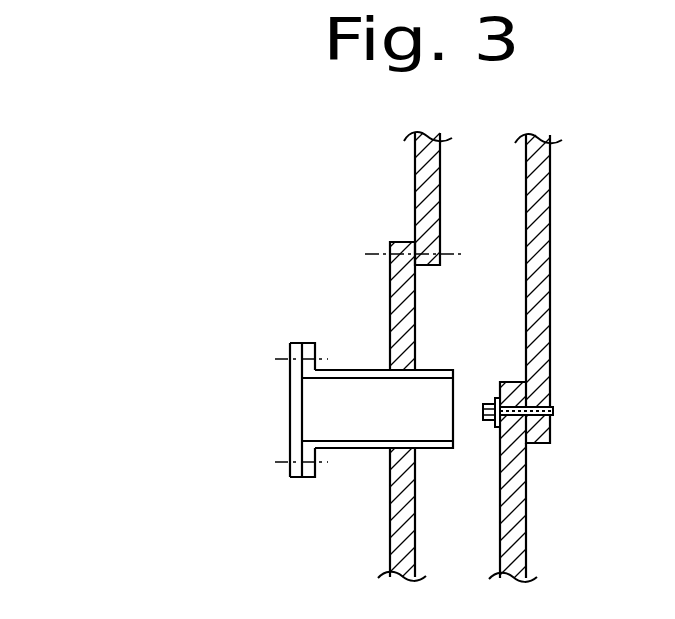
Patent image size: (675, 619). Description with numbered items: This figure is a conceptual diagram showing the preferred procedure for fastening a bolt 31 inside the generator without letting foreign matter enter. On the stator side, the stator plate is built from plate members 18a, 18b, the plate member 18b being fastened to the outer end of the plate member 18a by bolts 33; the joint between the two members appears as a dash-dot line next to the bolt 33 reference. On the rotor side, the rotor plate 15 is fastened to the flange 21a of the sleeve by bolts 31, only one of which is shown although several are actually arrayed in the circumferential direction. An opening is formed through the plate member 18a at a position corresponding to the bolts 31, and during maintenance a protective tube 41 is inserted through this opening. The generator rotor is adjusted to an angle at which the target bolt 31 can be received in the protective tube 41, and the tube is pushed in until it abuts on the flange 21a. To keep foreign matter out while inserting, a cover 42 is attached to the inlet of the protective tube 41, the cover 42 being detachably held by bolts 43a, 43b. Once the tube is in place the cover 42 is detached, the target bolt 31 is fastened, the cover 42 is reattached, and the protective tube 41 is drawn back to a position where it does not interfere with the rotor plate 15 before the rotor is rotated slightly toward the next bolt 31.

The rotor plate 15 is at (538, 200).
The plate member 18a is at (402, 547).
The plate member 18b is at (427, 162).
The flange 21a is at (512, 545).
The bolt 31 is at (493, 400).
The bolt 33 is at (377, 253).
The protective tube 41 is at (308, 343).
The cover 42 is at (289, 410).
The bolt 43a is at (285, 357).
The bolt 43b is at (283, 464).